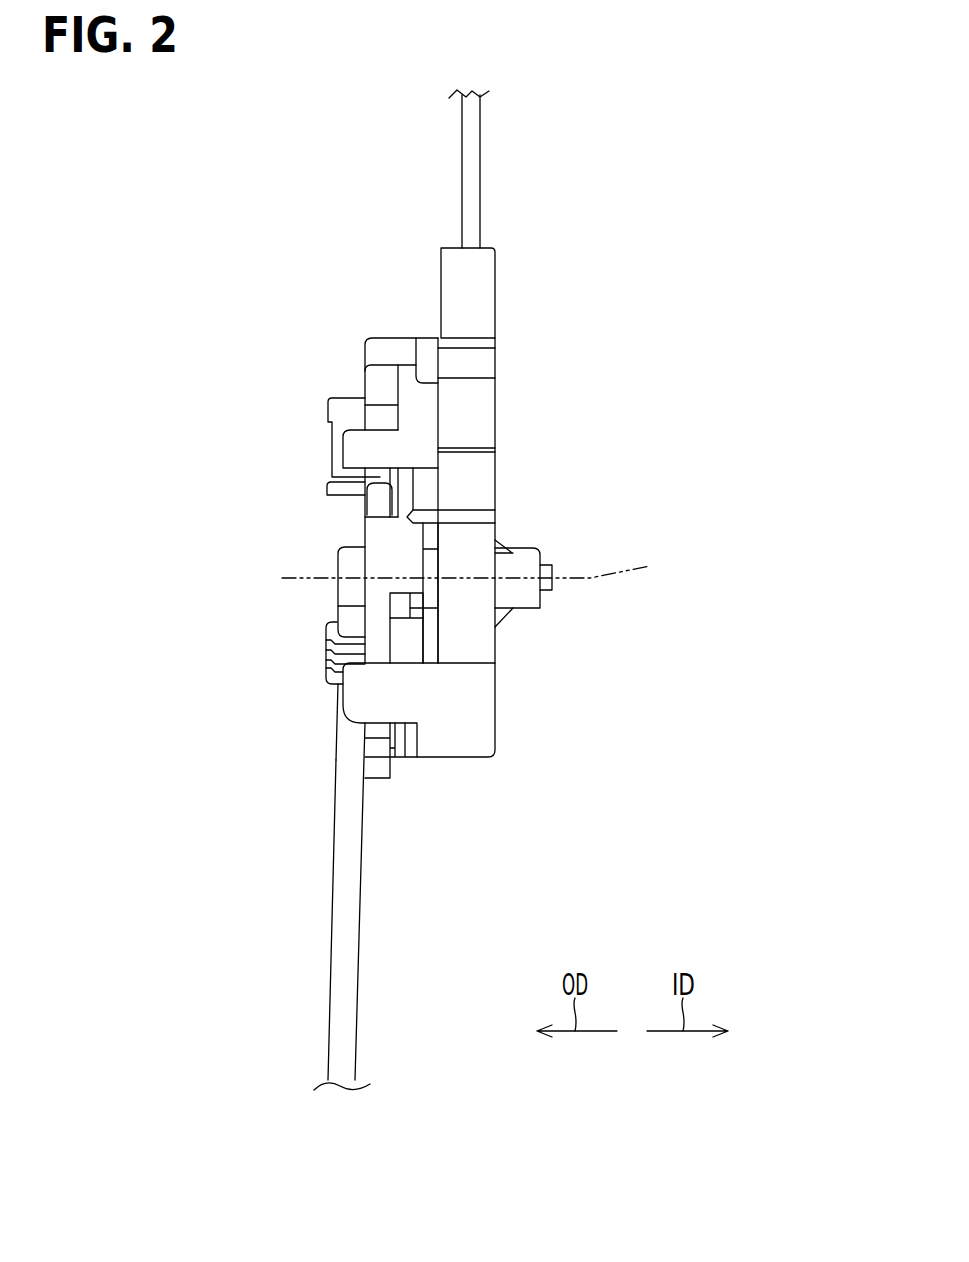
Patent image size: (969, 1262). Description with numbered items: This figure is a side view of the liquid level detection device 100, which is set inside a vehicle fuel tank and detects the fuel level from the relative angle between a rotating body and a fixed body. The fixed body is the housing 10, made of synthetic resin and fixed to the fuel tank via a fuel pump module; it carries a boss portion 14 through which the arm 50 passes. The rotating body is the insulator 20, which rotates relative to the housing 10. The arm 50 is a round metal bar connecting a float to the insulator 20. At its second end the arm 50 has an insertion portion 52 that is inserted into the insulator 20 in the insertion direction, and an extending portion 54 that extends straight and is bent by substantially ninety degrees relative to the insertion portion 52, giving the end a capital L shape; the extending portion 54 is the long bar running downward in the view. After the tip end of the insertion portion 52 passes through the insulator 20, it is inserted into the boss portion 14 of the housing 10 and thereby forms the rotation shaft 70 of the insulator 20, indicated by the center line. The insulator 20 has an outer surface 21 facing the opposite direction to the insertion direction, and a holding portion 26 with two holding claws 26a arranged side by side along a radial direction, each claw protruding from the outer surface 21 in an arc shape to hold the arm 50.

The liquid level detection device 100 is at (392, 290).
The insulator 20 is at (383, 543).
The outer surface 21 is at (363, 557).
The holding portion 26 is at (222, 605).
The holding claw 26a is at (330, 628).
The extending portion 54 is at (340, 705).
The housing 10 is at (477, 708).
The arm 50 is at (323, 893).
The boss portion 14 is at (533, 600).
The insertion portion 52 is at (553, 577).
The rotation shaft 70 is at (482, 557).